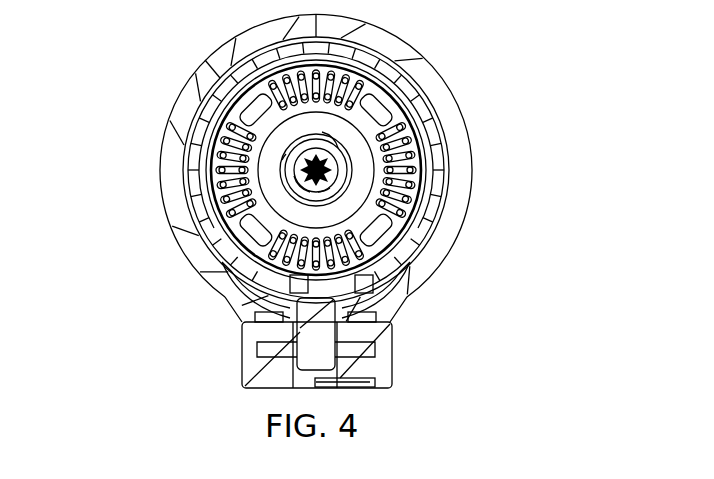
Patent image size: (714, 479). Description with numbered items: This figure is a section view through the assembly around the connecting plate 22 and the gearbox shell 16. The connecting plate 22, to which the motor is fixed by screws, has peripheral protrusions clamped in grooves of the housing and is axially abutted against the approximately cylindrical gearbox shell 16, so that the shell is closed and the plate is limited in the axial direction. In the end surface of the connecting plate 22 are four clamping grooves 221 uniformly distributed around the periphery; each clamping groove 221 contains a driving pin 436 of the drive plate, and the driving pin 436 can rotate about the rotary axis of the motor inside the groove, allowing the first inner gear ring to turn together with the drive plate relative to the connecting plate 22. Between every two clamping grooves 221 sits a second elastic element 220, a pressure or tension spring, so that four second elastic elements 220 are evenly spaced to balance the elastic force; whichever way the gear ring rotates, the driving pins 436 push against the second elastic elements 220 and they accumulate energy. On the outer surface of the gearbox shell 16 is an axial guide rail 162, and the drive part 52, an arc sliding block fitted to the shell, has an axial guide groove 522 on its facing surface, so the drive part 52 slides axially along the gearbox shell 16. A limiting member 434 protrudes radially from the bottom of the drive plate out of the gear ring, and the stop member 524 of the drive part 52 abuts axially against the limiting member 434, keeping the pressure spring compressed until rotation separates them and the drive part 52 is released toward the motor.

The gearbox shell 16 is at (180, 123).
The connecting plate 22 is at (210, 202).
The second elastic element 220 is at (215, 162).
The clamping groove 221 is at (230, 110).
The driving pin 436 is at (232, 96).
The limiting member 434 is at (262, 315).
The axial guide rail 162 is at (378, 285).
The drive part 52 is at (397, 320).
The axial guide groove 522 is at (383, 291).
The stop member 524 is at (235, 295).